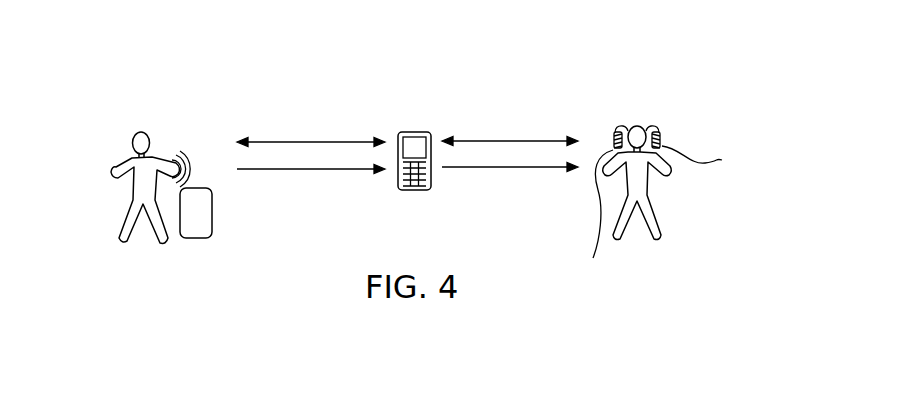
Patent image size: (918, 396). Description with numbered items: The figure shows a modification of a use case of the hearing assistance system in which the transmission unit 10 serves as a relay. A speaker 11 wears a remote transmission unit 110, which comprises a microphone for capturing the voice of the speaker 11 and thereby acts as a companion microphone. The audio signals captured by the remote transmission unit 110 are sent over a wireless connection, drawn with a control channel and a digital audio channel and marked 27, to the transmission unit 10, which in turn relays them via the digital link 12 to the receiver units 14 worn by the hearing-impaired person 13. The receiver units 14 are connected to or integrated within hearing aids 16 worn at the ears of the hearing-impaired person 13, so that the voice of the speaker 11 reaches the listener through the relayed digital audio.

The transmission unit 10 is at (412, 131).
The speaker 11 is at (143, 131).
The remote transmission unit 110 is at (205, 219).
The digital audio link 27 is at (309, 187).
The digital link 12 is at (505, 186).
The hearing-impaired person 13 is at (637, 124).
The hearing aid 16 is at (621, 127).
The receiver unit 14 is at (664, 211).